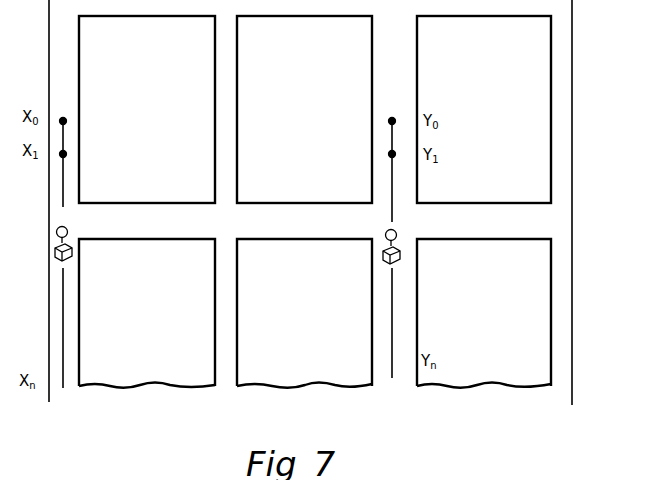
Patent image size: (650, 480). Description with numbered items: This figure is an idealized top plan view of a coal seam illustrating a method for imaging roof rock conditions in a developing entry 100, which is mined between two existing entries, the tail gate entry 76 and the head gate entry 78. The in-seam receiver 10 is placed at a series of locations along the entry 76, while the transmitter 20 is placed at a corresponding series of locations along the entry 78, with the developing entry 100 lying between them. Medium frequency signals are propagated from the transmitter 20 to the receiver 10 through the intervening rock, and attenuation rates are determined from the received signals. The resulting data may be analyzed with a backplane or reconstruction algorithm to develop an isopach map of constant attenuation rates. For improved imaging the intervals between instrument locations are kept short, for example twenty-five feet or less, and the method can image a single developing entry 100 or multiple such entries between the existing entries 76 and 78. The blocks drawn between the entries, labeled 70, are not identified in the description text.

The in-seam receiver 10 is at (397, 234).
The transmitter 20 is at (68, 231).
The display element 70 is at (154, 116).
The tail gate entry 76 is at (68, 389).
The head gate entry 78 is at (400, 381).
The developing entry 100 is at (226, 386).